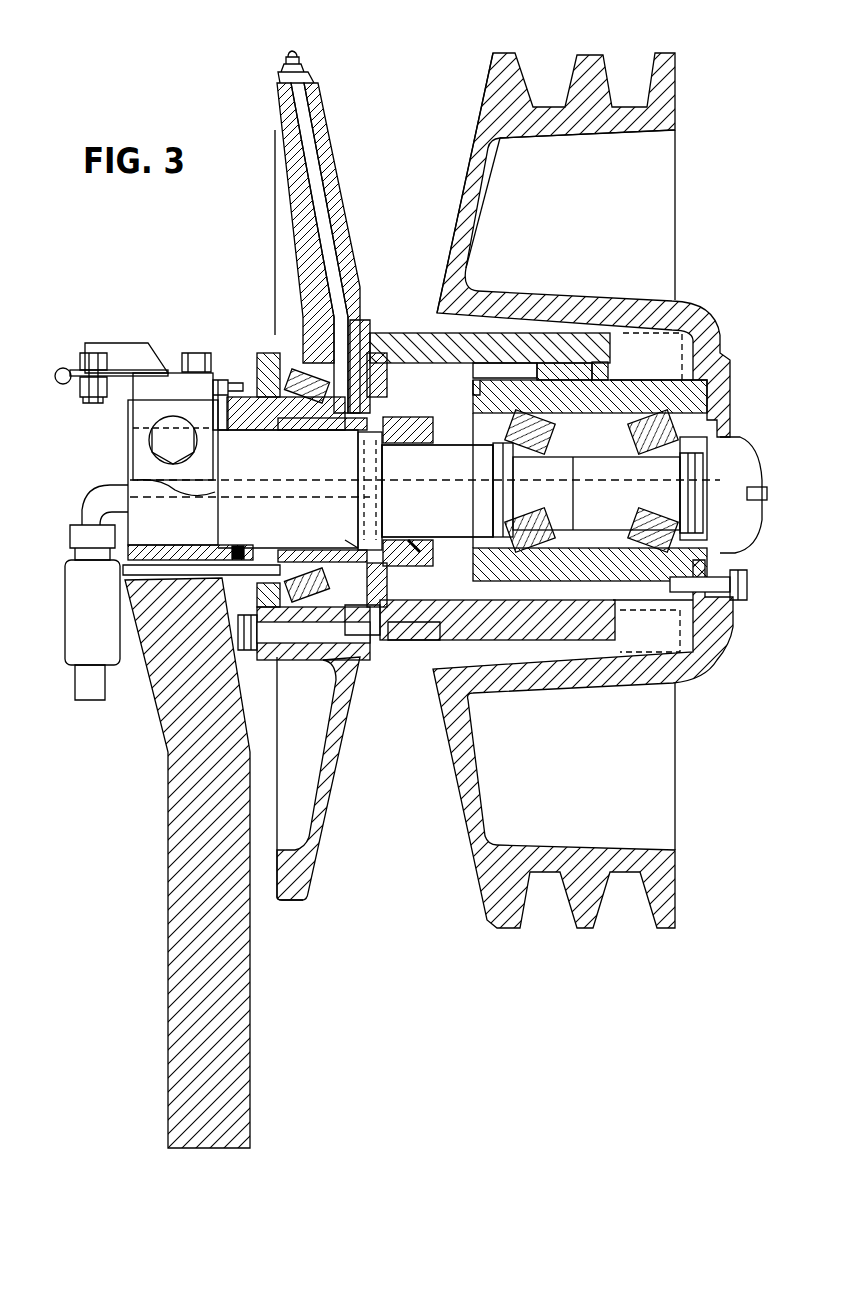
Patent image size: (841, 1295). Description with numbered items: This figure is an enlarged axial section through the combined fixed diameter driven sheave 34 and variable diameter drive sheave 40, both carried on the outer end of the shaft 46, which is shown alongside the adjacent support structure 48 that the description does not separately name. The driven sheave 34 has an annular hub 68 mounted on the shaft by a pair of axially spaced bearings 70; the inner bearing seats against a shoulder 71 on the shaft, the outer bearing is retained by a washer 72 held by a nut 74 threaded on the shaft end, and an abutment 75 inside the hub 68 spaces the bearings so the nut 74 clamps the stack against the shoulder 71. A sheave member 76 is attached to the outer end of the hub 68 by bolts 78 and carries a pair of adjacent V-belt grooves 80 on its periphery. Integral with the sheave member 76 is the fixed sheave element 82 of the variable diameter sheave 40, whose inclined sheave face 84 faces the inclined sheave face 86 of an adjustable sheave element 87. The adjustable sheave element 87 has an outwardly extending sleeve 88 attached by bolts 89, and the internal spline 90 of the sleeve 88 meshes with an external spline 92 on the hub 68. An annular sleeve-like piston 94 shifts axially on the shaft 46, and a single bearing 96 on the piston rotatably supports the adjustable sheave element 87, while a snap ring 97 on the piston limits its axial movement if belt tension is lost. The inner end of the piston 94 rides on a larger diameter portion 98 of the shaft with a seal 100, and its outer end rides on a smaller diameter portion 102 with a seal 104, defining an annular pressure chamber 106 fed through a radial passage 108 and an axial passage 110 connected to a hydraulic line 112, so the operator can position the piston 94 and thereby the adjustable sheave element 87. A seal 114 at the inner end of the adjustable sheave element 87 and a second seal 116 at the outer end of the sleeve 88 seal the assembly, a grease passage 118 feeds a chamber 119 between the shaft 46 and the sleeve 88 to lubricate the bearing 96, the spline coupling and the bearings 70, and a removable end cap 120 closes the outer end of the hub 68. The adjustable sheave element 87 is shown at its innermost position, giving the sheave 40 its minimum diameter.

The fixed diameter driven sheave 34 is at (676, 888).
The variable diameter drive sheave 40 is at (295, 908).
The shaft 46 is at (460, 536).
The pedestal 48 is at (250, 1033).
The annular hub 68 is at (636, 602).
The bearings 70 is at (537, 449).
The shoulder 71 is at (513, 498).
The washer 72 is at (682, 497).
The nut 74 is at (735, 443).
The abutment 75 is at (595, 414).
The sheave member 76 is at (593, 134).
The bolts 78 is at (749, 590).
The V-belt grooves 80 is at (602, 62).
The fixed sheave element 82 is at (457, 213).
The inclined sheave face 84 is at (474, 138).
The inclined sheave face 86 is at (342, 227).
The adjustable sheave element 87 is at (336, 772).
The sleeve 88 is at (415, 332).
The bolts 89 is at (240, 615).
The internal spline 90 is at (435, 380).
The external spline 92 is at (480, 382).
The piston 94 is at (398, 558).
The bearing 96 is at (325, 396).
The snap ring 97 is at (393, 416).
The larger diameter portion 98 is at (263, 459).
The seal 100 is at (237, 545).
The smaller diameter portion 102 is at (456, 475).
The seal 104 is at (415, 540).
The annular pressure chamber 106 is at (362, 545).
The radial passage 108 is at (358, 456).
The axial passage 110 is at (280, 490).
The hydraulic line 112 is at (90, 702).
The seal 114 is at (250, 372).
The second seal 116 is at (604, 372).
The grease passage 118 is at (312, 173).
The chamber 119 is at (397, 615).
The removable end cap 120 is at (752, 525).